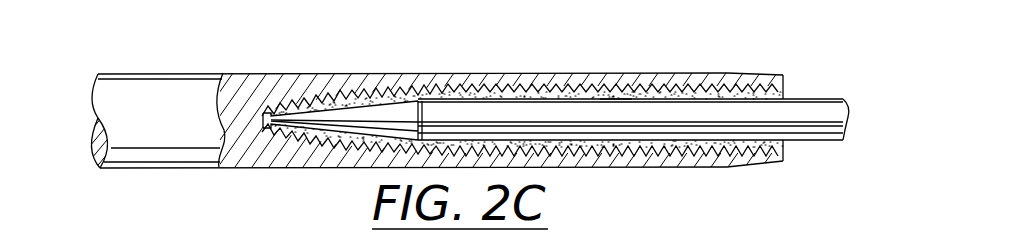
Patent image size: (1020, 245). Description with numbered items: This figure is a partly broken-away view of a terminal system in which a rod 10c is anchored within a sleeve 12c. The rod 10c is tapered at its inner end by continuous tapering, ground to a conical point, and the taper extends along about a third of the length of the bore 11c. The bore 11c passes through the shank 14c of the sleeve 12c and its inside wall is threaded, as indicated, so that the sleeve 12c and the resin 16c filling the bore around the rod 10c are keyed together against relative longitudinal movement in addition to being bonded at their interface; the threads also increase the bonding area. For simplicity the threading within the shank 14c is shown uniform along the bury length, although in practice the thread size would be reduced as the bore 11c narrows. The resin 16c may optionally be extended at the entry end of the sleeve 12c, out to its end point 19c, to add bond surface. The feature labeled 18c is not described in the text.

The rod 10c is at (828, 97).
The bore 11c is at (610, 85).
The sleeve 12c is at (530, 73).
The shank 14c is at (213, 75).
The resin 16c is at (458, 87).
The distal end portion of tube 18c is at (757, 72).
The end point 19c is at (784, 162).